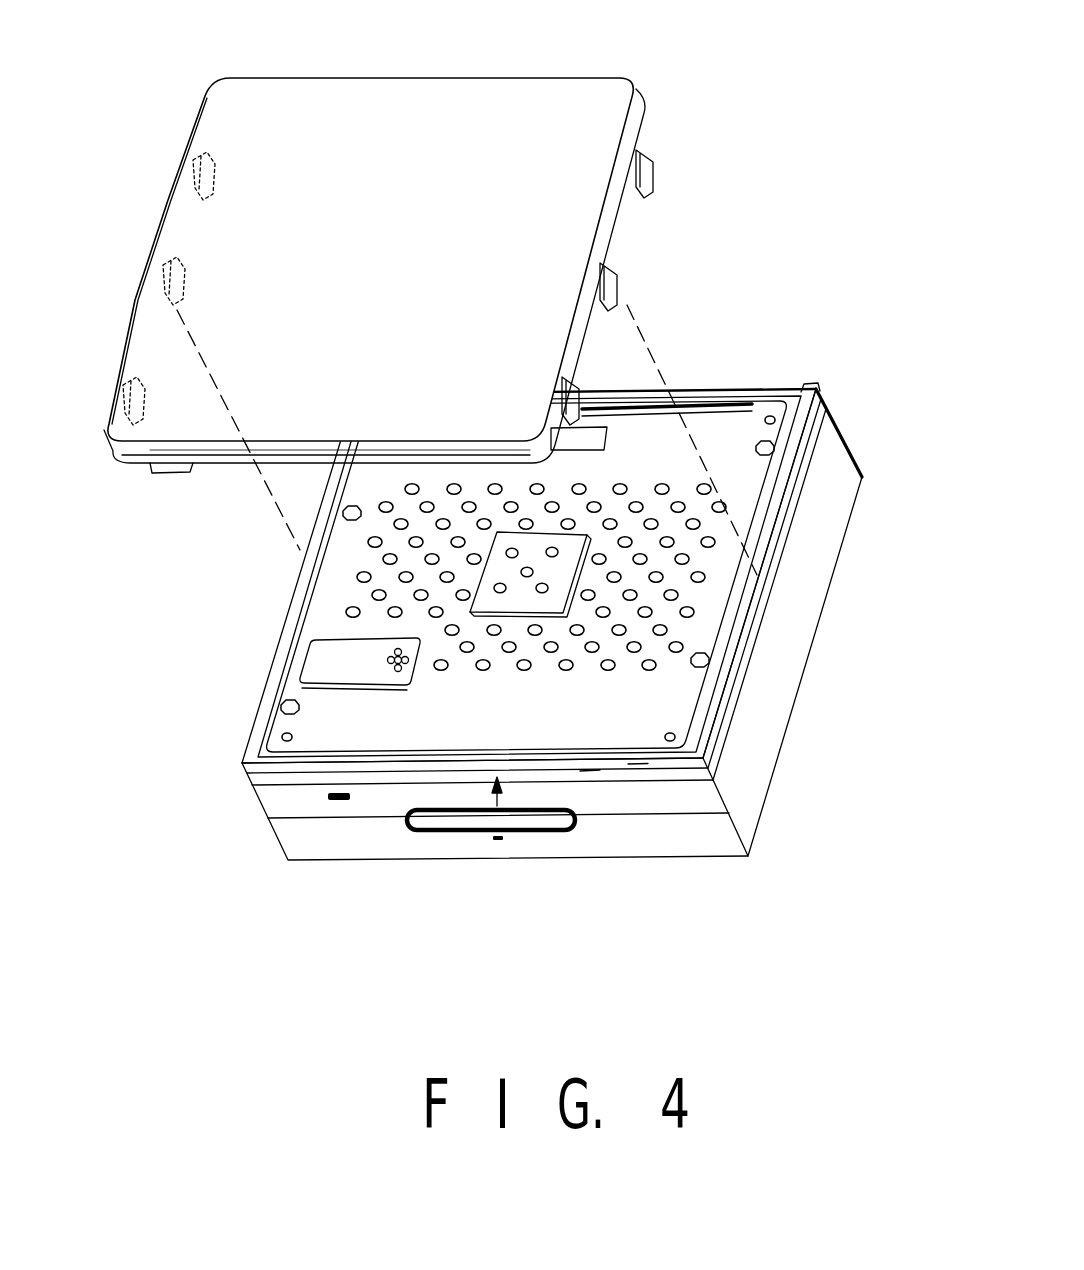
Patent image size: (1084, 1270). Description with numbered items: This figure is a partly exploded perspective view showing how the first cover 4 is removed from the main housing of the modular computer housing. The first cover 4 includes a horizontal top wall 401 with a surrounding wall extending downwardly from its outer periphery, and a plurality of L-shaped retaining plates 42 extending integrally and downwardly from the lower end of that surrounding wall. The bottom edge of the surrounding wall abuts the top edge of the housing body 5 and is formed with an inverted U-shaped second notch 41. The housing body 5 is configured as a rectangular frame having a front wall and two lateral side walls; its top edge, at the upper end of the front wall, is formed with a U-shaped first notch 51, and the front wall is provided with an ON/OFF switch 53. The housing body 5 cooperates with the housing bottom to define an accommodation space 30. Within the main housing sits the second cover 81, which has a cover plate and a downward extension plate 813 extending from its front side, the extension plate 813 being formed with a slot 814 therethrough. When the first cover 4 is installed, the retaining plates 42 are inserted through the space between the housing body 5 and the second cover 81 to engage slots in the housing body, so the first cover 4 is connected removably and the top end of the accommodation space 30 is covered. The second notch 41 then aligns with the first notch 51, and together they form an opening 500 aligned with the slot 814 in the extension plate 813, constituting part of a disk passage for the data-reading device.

The first cover 4 is at (557, 92).
The horizontal top wall 401 is at (425, 98).
The L-shaped retaining plates 42 is at (135, 378).
The second notch 41 is at (192, 468).
The housing body 5 is at (782, 680).
The accommodation space 30 is at (690, 758).
The second cover 81 is at (737, 513).
The extension plate 813 is at (637, 763).
The slot 814 is at (590, 768).
The first notch 51 is at (383, 790).
The ON/OFF switch 53 is at (467, 822).
The opening 500 is at (497, 806).